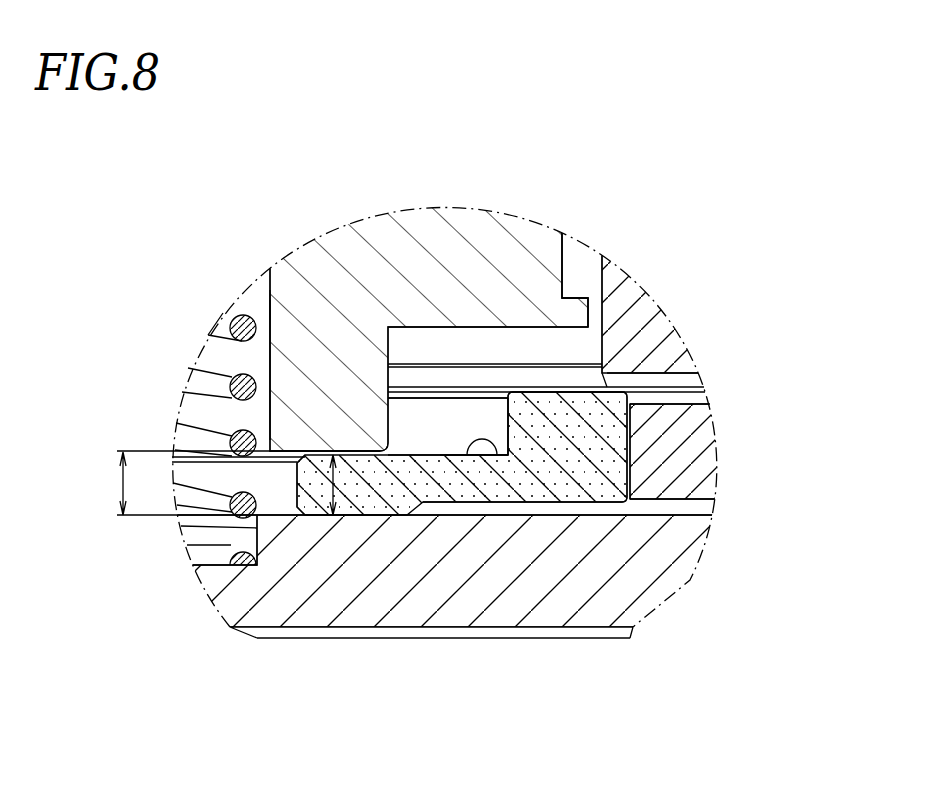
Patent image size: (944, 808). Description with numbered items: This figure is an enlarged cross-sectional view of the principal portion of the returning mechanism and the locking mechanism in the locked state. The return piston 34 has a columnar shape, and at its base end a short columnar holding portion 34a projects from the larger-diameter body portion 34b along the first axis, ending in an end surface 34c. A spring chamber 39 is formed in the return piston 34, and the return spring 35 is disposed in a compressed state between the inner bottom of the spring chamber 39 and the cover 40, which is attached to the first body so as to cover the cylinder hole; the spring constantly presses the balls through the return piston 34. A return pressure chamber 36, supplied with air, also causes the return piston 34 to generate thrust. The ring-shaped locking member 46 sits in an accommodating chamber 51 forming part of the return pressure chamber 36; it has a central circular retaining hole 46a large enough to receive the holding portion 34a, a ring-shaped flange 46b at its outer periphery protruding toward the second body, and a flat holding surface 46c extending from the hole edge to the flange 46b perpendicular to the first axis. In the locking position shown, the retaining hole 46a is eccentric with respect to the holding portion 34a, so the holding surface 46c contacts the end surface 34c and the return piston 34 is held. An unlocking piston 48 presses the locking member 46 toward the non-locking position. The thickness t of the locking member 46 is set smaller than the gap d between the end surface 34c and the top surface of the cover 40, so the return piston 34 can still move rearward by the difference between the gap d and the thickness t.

The return piston 34 is at (370, 270).
The holding portion 34a is at (315, 408).
The body portion 34b is at (530, 273).
The end surface 34c is at (360, 451).
The return spring 35 is at (242, 330).
The return pressure chamber 36 is at (572, 348).
The spring chamber 39 is at (268, 307).
The cover 40 is at (568, 580).
The locking member 46 is at (525, 565).
The retaining hole 46a is at (295, 490).
The flange 46b is at (588, 427).
The holding surface 46c is at (502, 460).
The unlocking piston 48 is at (667, 477).
The accommodating chamber 51 is at (443, 420).
The gap d is at (110, 483).
The thickness t is at (335, 485).